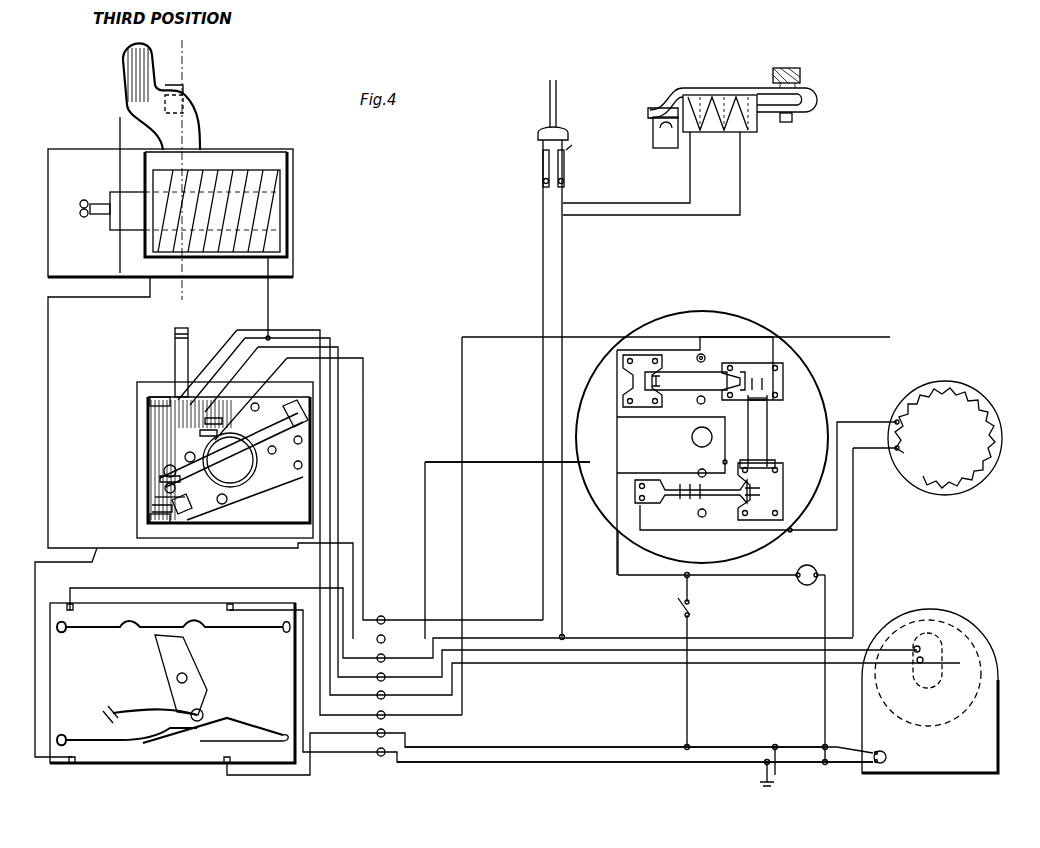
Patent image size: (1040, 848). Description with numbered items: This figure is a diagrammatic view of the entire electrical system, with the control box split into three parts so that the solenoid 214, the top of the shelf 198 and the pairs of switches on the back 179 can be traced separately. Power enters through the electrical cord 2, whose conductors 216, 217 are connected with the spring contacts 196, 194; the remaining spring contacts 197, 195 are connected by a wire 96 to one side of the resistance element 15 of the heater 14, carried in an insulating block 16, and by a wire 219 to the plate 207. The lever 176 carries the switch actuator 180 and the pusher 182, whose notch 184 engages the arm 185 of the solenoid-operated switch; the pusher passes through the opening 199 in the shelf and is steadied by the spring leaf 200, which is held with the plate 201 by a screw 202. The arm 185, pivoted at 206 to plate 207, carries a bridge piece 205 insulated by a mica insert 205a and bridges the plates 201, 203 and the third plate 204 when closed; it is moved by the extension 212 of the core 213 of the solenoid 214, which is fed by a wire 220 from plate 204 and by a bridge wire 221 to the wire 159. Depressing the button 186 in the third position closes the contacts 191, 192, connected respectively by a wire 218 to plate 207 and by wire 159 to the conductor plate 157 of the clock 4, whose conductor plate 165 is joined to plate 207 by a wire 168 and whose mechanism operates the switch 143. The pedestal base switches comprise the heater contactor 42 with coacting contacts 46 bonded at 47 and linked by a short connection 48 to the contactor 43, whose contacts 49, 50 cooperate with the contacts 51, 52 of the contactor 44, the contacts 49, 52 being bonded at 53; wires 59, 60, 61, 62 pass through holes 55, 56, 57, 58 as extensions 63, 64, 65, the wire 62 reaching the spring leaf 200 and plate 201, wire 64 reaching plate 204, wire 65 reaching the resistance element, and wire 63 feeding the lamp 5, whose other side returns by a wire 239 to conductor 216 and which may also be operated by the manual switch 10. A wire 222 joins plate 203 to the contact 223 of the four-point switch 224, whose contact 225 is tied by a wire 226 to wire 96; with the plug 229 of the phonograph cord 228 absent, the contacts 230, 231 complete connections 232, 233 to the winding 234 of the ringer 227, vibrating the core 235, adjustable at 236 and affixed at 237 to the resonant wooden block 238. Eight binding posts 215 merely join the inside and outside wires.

The electrical cord 2 is at (777, 770).
The clock 4 is at (895, 622).
The lamp 5 is at (807, 585).
The manual switch 10 is at (690, 608).
The electrical heater 14 is at (890, 408).
The resistance element 15 is at (898, 420).
The insulating block 16 is at (925, 487).
The heater contactor 42 is at (668, 490).
The contactor 43 is at (752, 396).
The contactor 44 is at (680, 385).
The coacting contacts 46 is at (758, 506).
The bond 47 is at (762, 498).
The short connection 48 is at (770, 460).
The contact 49 is at (778, 390).
The contact 50 is at (772, 382).
The contact 51 is at (640, 360).
The contact 52 is at (655, 378).
The bond 53 is at (740, 378).
The hole 55 is at (705, 356).
The hole 56 is at (700, 403).
The hole 57 is at (700, 470).
The hole 58 is at (700, 516).
The wire 59 is at (760, 378).
The wire 60 is at (728, 428).
The wire 61 is at (690, 513).
The wire 62 is at (322, 330).
The extension wire 63 is at (617, 440).
The extension wire 64 is at (240, 555).
The extension wire 65 is at (790, 531).
The wire 96 is at (853, 542).
The switch 143 is at (935, 658).
The conductor plate 157 is at (942, 672).
The wire 159 is at (332, 343).
The conductor plate 165 is at (930, 640).
The wire 168 is at (340, 397).
The lever 176 is at (132, 77).
The back 179 is at (148, 413).
The switch actuator 180 is at (158, 660).
The pusher 182 is at (178, 505).
The notch 184 is at (118, 698).
The switch arm 185 is at (160, 498).
The button 186 is at (177, 92).
The contact 191 is at (170, 435).
The contact 192 is at (192, 418).
The spring contact 194 is at (262, 730).
The spring contact 195 is at (152, 518).
The spring contact 196 is at (240, 628).
The spring contact 197 is at (150, 400).
The shelf 198 is at (302, 465).
The opening 199 is at (160, 510).
The spring leaf 200 is at (165, 488).
The plate 201 is at (165, 469).
The screw 202 is at (160, 478).
The plate 203 is at (185, 455).
The third plate 204 is at (235, 498).
The bridge piece 205 is at (245, 472).
The mica insert 205a is at (210, 500).
The pivot 206 is at (276, 450).
The plate 207 is at (305, 430).
The core extension 212 is at (97, 200).
The core 213 is at (120, 125).
The solenoid 214 is at (218, 170).
The binding posts 215 is at (381, 737).
The conductor 216 is at (695, 763).
The conductor 217 is at (710, 746).
The wire 218 is at (180, 450).
The wire 219 is at (95, 562).
The wire 220 is at (147, 297).
The bridge wire 221 is at (270, 300).
The wire 222 is at (363, 372).
The contact 223 is at (543, 152).
The four-point switch 224 is at (581, 154).
The contact 225 is at (550, 165).
The wire 226 is at (562, 270).
The ringer 227 is at (756, 84).
The 2-wire cord 228 is at (550, 108).
The plug 229 is at (538, 136).
The contact 230 is at (545, 183).
The contact 231 is at (558, 188).
The wire connection 232 is at (635, 216).
The wire connection 233 is at (625, 203).
The winding 234 is at (715, 135).
The core 235 is at (793, 122).
The adjustment 236 is at (800, 70).
The attachment 237 is at (650, 113).
The resonant wooden block 238 is at (655, 142).
The wire 239 is at (825, 693).